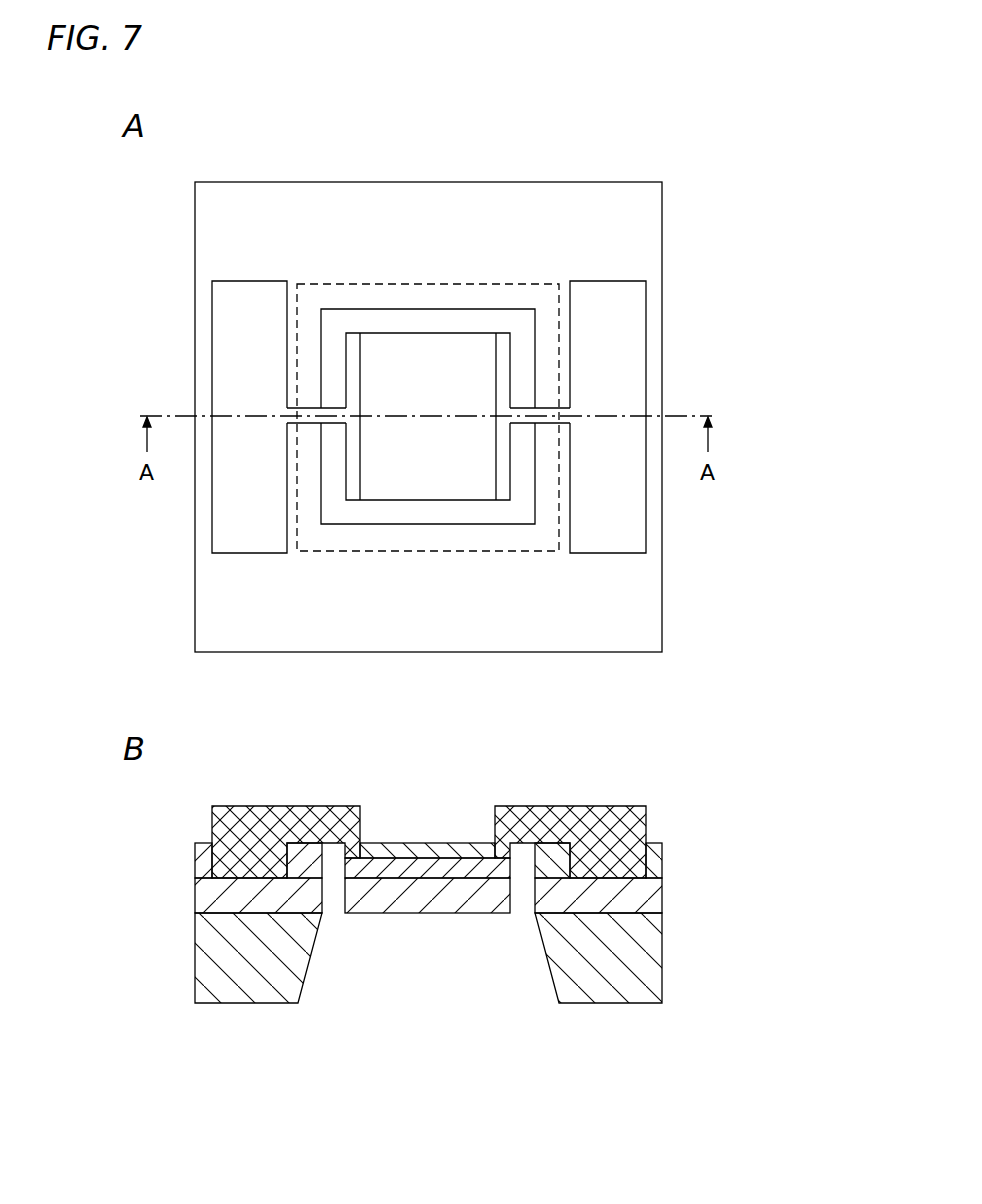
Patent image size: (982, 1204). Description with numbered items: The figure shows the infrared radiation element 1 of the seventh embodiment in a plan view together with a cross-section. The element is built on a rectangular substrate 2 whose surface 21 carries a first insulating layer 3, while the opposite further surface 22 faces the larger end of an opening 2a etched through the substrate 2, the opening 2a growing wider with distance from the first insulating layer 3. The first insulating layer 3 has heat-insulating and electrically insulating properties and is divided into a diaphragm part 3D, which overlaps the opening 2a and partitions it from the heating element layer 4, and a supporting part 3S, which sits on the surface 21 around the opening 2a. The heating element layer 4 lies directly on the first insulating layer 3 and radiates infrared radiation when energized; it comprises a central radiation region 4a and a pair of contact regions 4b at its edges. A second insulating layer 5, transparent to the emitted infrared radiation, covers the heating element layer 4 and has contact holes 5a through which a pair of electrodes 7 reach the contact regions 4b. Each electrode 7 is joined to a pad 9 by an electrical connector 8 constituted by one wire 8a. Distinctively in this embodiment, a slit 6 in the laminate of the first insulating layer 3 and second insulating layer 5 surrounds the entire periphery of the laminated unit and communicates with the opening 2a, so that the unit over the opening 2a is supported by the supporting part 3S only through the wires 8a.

The infrared radiation element 1 is at (662, 204).
The substrate 2 is at (394, 197).
The opening 2a is at (367, 300).
The surface 21 is at (232, 905).
The further surface 22 is at (246, 1005).
The first insulating layer 3 is at (407, 913).
The diaphragm part 3D is at (443, 900).
The supporting part 3S is at (653, 885).
The heating element layer 4 is at (433, 360).
The radiation region 4a is at (428, 870).
The contact region 4b is at (347, 915).
The second insulating layer 5 is at (449, 197).
The contact hole 5a is at (362, 857).
The slit 6 is at (415, 318).
The electrode 7 is at (505, 371).
The electrical connector 8 is at (430, 598).
The wire 8a is at (308, 412).
The pad 9 is at (612, 320).